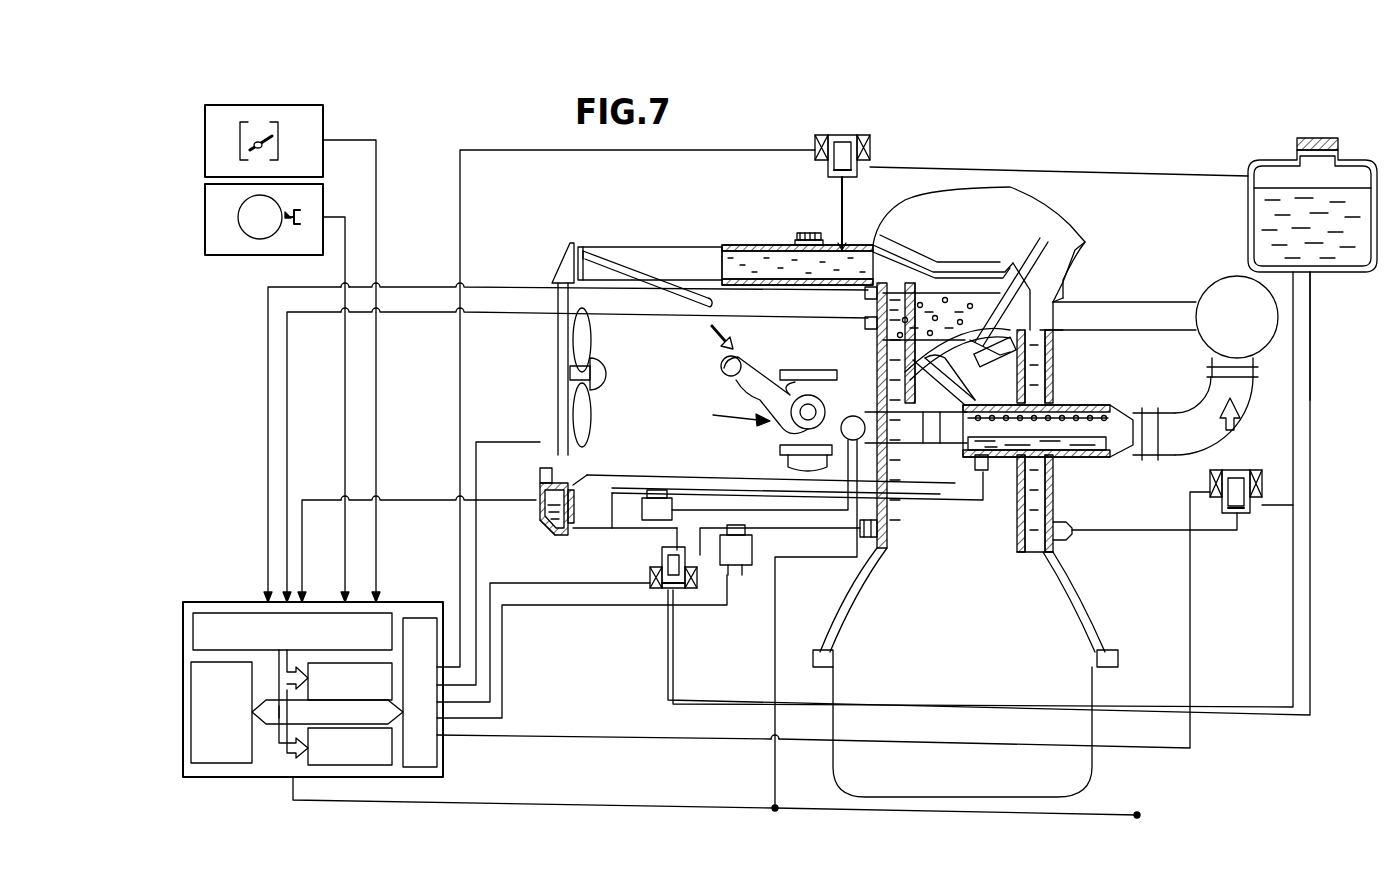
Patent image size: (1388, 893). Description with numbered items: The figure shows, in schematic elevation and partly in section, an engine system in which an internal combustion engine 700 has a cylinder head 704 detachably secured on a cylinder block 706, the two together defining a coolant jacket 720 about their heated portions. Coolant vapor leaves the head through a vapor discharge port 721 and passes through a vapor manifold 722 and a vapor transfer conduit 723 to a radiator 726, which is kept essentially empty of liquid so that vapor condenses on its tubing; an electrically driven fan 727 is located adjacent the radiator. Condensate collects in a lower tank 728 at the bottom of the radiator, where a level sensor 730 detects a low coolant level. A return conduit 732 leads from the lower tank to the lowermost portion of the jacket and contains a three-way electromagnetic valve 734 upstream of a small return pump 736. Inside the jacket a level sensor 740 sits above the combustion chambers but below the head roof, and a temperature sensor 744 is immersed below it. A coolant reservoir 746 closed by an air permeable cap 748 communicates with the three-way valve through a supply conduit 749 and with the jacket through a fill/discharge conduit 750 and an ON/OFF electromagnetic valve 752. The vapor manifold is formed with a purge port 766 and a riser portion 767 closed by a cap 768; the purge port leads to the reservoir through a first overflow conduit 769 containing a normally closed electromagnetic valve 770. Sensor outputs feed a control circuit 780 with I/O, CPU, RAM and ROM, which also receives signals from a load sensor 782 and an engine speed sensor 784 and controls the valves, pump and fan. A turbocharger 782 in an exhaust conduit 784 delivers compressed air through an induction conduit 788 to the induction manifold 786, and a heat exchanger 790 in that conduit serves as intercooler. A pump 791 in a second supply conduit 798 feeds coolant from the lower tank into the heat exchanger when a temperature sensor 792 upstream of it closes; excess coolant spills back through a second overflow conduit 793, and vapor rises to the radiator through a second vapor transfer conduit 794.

The internal combustion engine 700 is at (1108, 229).
The cylinder head 704 is at (1070, 278).
The cylinder block 706 is at (965, 672).
The coolant jacket 720 is at (1068, 533).
The vapor discharge port 721 is at (882, 258).
The vapor manifold 722 is at (805, 285).
The vapor transfer conduit 723 is at (603, 247).
The radiator 726 is at (553, 330).
The electrically driven fan 727 is at (607, 376).
The lower tank 728 is at (545, 530).
The level sensor 730 is at (543, 480).
The return conduit 732 is at (600, 530).
The three-way electromagnetic valve 734 is at (655, 590).
The return pump 736 is at (742, 578).
The level sensor 740 is at (905, 275).
The temperature sensor 744 is at (995, 290).
The coolant reservoir 746 is at (1350, 272).
The air permeable cap 748 is at (1297, 140).
The supply conduit 749 is at (1312, 630).
The fill/discharge conduit 750 is at (1293, 452).
The ON/OFF electromagnetic valve 752 is at (1246, 515).
The purge port 766 is at (840, 242).
The riser portion 767 is at (790, 242).
The cap 768 is at (800, 232).
The first overflow conduit 769 is at (897, 166).
The normally closed electromagnetic valve 770 is at (815, 140).
The control circuit 780 is at (218, 602).
The load sensor / turbocharger 782 is at (325, 120).
The engine speed sensor / exhaust conduit 784 is at (223, 255).
The induction manifold 786 is at (1186, 302).
The induction conduit 788 is at (1150, 458).
The heat exchanger 790 is at (1085, 458).
The pump 791 is at (648, 495).
The temperature sensor 792 is at (840, 432).
The second overflow conduit 793 is at (690, 478).
The second vapor transfer conduit 794 is at (650, 265).
The second supply conduit 798 is at (983, 503).